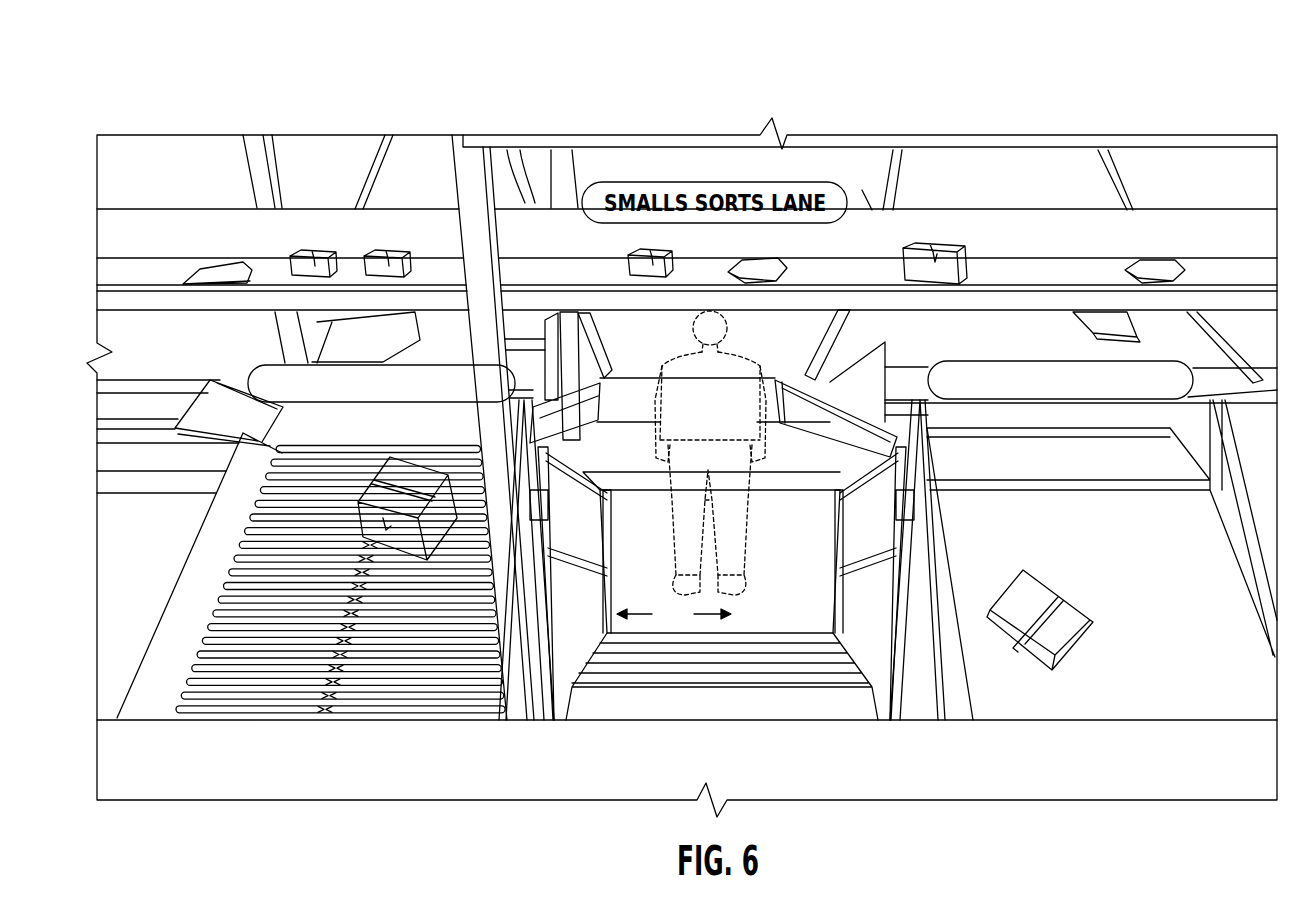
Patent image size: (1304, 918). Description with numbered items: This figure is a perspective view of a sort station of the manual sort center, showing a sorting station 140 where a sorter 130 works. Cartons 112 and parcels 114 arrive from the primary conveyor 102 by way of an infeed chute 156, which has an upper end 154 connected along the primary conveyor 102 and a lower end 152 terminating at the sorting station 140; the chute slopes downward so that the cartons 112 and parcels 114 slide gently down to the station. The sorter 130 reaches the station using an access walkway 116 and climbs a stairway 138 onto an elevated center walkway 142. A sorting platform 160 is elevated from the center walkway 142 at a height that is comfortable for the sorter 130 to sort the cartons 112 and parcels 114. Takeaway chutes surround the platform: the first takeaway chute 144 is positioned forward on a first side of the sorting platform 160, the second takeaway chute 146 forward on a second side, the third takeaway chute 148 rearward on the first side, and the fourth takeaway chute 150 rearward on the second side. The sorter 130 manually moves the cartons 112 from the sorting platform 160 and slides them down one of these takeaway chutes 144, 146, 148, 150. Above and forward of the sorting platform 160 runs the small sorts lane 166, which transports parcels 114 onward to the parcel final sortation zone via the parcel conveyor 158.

The primary conveyor 102 is at (663, 141).
The access walkway 116 is at (1013, 782).
The upper end 154 is at (807, 148).
The sorting station 140 is at (959, 104).
The parcel conveyor 158 is at (396, 221).
The infeed chute 156 is at (880, 192).
The small sorts lane 166 is at (158, 268).
The parcel 114 is at (955, 255).
The second takeaway chute 146 is at (283, 362).
The first takeaway chute 144 is at (260, 594).
The carton 112 is at (370, 495).
The sorting platform 160 is at (623, 403).
The lower end 152 is at (748, 349).
The fourth takeaway chute 150 is at (1018, 336).
The third takeaway chute 148 is at (1088, 553).
The stairway 138 is at (810, 708).
The sorter 130 is at (740, 516).
The center walkway 142 is at (674, 614).